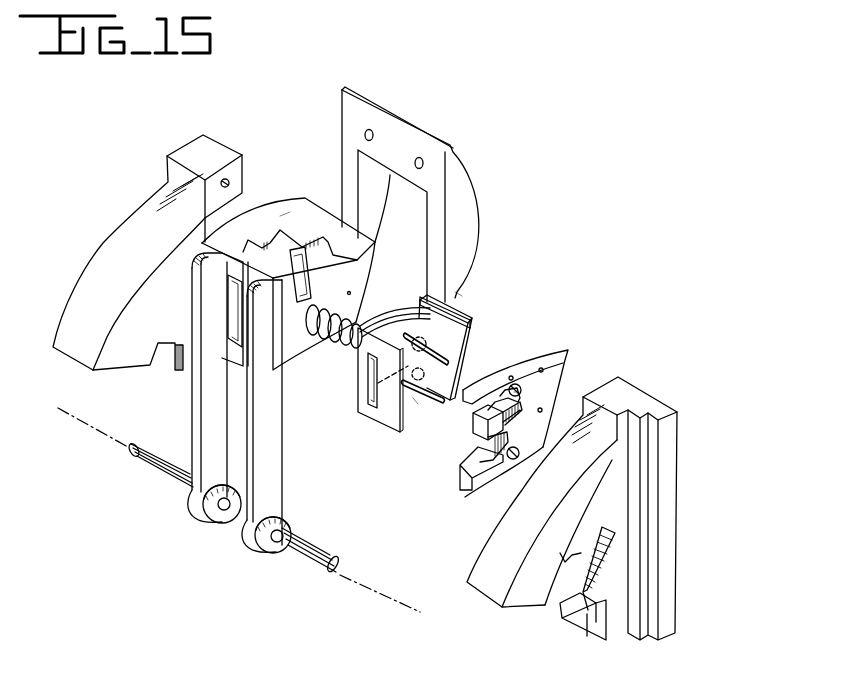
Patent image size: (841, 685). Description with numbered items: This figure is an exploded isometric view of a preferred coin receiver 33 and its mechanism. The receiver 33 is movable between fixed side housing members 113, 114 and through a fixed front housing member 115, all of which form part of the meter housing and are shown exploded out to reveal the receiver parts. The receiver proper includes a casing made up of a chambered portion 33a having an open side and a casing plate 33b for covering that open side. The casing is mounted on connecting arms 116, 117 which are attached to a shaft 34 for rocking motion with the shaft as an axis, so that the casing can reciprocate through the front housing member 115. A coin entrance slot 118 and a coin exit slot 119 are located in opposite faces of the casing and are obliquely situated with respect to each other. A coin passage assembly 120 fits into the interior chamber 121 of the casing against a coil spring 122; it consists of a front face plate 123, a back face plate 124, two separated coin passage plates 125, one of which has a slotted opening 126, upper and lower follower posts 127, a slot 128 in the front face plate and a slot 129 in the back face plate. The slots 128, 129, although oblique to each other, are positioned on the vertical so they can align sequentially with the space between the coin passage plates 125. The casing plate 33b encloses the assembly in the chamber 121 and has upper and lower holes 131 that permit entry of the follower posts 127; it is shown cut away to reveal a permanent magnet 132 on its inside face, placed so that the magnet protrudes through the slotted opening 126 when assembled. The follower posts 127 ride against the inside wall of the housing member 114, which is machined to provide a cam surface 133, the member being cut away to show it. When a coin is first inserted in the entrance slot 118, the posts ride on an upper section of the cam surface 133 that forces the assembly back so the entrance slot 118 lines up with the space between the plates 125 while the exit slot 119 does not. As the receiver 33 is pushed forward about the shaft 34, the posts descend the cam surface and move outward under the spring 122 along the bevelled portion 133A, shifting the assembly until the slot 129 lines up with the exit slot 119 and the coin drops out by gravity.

The side housing member 113 is at (130, 233).
The side housing member 114 is at (663, 527).
The front housing member 115 is at (460, 193).
The connecting arm 116 is at (268, 448).
The connecting arm 117 is at (212, 422).
The coin entrance slot 118 is at (312, 280).
The coin exit slot 119 is at (238, 312).
The coin passage assembly 120 is at (415, 402).
The interior chamber 121 is at (288, 340).
The coil spring 122 is at (347, 347).
The front face plate 123 is at (470, 342).
The back face plate 124 is at (387, 417).
The coin passage plates 125 is at (410, 313).
The slotted opening 126 is at (452, 313).
The follower posts 127 is at (440, 392).
The slot 128 is at (460, 290).
The slot 129 is at (370, 400).
The holes 131 is at (519, 450).
The permanent magnet 132 is at (483, 418).
The cam surface 133 is at (590, 545).
The bevelled portion of the cam surface 133A is at (582, 573).
The coin receiver 33 is at (288, 244).
The chambered portion 33a is at (282, 217).
The casing plate 33b is at (563, 355).
The shaft 34 is at (155, 465).